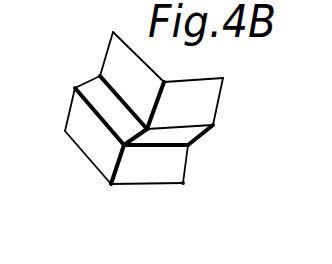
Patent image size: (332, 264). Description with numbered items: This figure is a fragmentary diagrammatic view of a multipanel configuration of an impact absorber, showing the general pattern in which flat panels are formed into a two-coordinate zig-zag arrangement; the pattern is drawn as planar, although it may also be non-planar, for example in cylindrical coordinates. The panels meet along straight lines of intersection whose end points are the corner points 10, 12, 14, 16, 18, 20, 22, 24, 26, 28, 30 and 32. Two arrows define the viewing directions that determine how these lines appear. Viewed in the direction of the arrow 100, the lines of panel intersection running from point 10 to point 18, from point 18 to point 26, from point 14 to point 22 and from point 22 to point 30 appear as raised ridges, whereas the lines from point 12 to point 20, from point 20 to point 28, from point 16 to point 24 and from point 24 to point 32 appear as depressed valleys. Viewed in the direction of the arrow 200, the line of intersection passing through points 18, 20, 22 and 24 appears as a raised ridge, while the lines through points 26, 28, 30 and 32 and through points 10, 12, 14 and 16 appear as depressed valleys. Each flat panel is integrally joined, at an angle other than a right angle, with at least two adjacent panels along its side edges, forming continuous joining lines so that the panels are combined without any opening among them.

The panel intersection point 10 is at (113, 32).
The panel intersection point 12 is at (100, 76).
The panel intersection point 14 is at (75, 88).
The panel intersection point 16 is at (65, 131).
The panel intersection point 18 is at (164, 82).
The panel intersection point 20 is at (146, 130).
The panel intersection point 22 is at (123, 145).
The panel intersection point 24 is at (111, 184).
The panel intersection point 26 is at (223, 78).
The panel intersection point 28 is at (213, 125).
The panel intersection point 30 is at (188, 145).
The panel intersection point 32 is at (183, 183).
The viewing direction arrow 100 is at (90, 212).
The viewing direction arrow 200 is at (238, 148).